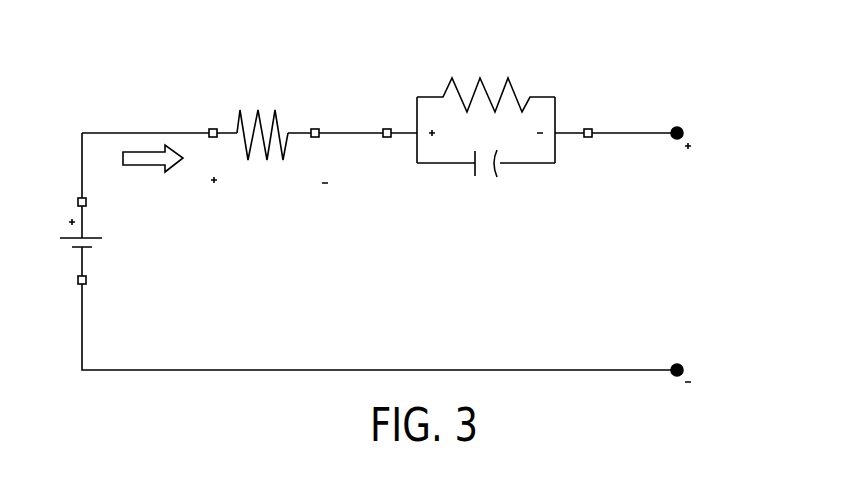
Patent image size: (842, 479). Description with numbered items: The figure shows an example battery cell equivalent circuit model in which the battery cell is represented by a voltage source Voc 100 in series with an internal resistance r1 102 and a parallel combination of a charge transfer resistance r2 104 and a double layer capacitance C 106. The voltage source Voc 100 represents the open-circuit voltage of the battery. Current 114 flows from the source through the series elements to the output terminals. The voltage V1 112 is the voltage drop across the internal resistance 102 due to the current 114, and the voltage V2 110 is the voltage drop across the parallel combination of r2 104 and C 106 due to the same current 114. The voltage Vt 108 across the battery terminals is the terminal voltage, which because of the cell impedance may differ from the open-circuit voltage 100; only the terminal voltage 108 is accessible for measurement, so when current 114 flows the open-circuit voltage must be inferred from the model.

The voltage source Voc 100 is at (90, 236).
The internal resistance r1 102 is at (237, 120).
The charge transfer resistance r2 104 is at (520, 79).
The double layer capacitance C 106 is at (471, 170).
The terminal voltage Vt 108 is at (684, 237).
The voltage V2 110 is at (468, 133).
The voltage V1 112 is at (265, 201).
The current 114 is at (132, 110).